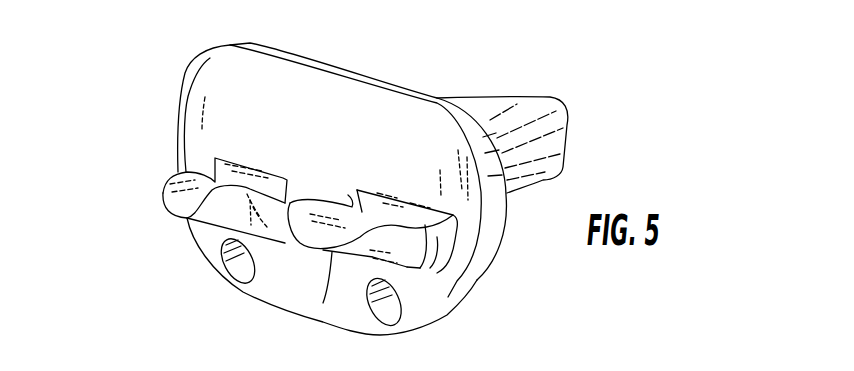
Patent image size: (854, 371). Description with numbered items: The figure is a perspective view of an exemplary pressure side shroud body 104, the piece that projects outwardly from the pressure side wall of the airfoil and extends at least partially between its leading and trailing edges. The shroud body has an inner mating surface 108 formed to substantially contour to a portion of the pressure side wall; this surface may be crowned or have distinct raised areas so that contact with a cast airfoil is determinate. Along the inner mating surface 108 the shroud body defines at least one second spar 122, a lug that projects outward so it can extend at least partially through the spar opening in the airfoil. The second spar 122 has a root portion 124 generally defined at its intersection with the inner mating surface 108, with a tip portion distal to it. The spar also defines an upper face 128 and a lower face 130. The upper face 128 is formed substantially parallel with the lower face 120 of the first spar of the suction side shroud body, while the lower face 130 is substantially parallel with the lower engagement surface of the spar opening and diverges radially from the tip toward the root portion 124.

The pressure side shroud body 104 is at (478, 100).
The inner mating surface 108 is at (220, 88).
The lower face of the first spar 120 is at (298, 232).
The second spar 122 is at (225, 227).
The root portion 124 is at (415, 285).
The upper face 128 is at (362, 212).
The lower face 130 is at (323, 303).